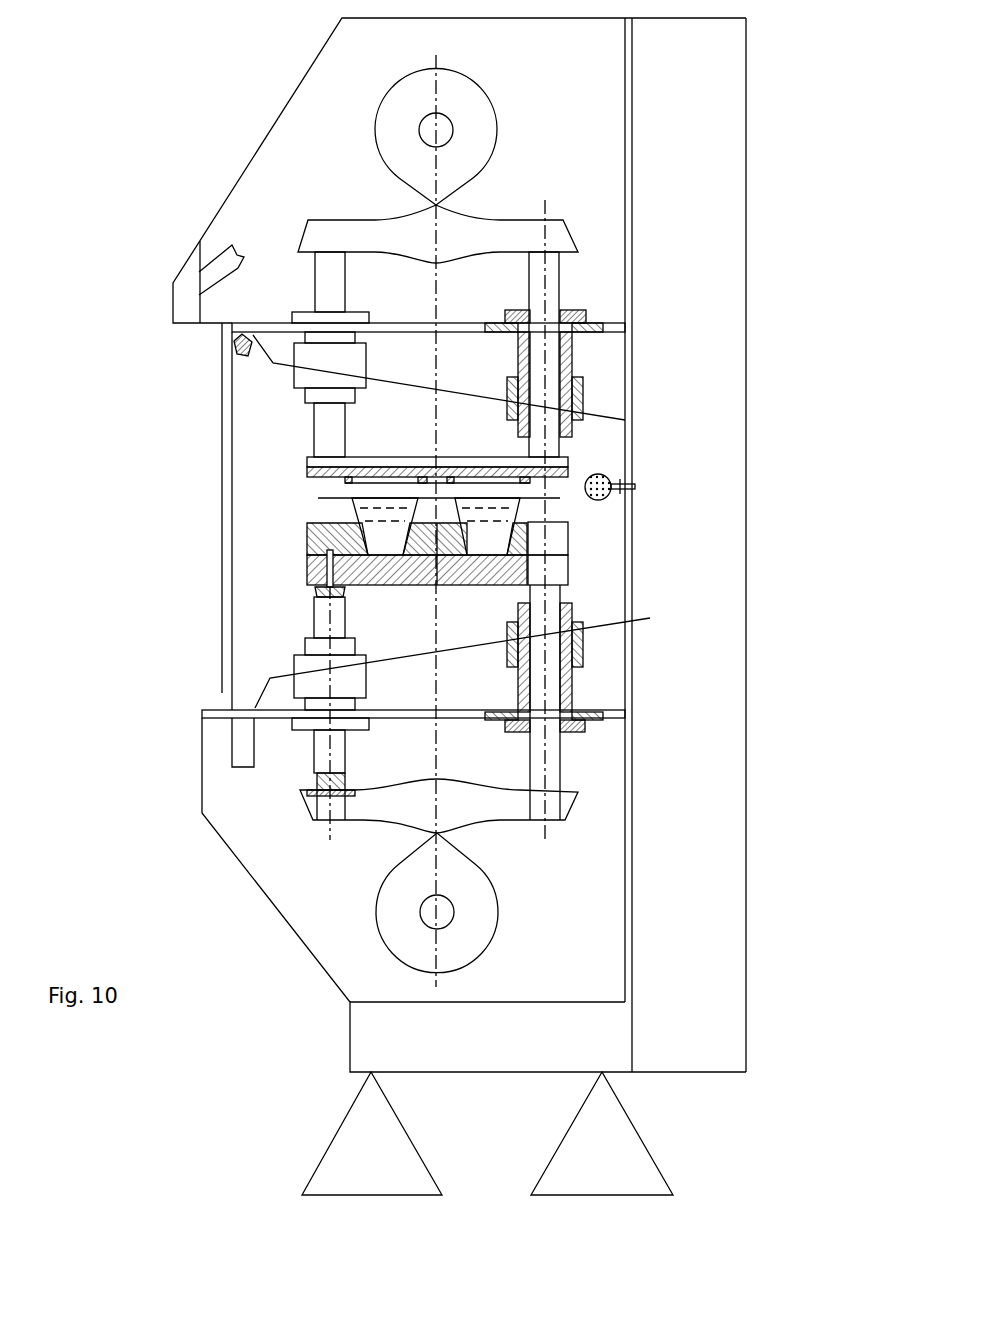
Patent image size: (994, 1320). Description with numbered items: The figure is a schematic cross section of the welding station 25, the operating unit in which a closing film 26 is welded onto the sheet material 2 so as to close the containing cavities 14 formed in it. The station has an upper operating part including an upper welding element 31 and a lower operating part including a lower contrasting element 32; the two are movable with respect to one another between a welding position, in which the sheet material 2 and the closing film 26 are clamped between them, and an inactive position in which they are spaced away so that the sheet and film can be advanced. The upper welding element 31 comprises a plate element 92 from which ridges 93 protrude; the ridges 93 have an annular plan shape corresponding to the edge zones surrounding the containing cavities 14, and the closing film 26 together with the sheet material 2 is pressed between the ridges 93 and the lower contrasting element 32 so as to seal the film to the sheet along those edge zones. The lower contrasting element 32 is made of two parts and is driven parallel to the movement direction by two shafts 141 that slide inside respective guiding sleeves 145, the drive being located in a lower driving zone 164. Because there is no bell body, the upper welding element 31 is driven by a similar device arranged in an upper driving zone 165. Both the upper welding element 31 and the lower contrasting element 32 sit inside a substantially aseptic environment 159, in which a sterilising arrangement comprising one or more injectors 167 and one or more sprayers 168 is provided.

The welding station 25 is at (152, 139).
The upper driving zone 165 is at (609, 283).
The lower driving zone 164 is at (660, 841).
The injector 167 is at (232, 365).
The closing film 26 is at (380, 497).
The upper welding element 31 is at (307, 460).
The plate element 92 is at (307, 470).
The ridges 93 is at (318, 498).
The sheet material 2 is at (348, 486).
The containing cavities 14 is at (507, 518).
The lower contrasting element 32 is at (307, 547).
The shafts 141 is at (322, 612).
The guiding sleeves 145 is at (575, 610).
The substantially aseptic environment 159 is at (602, 452).
The sprayer 168 is at (612, 479).